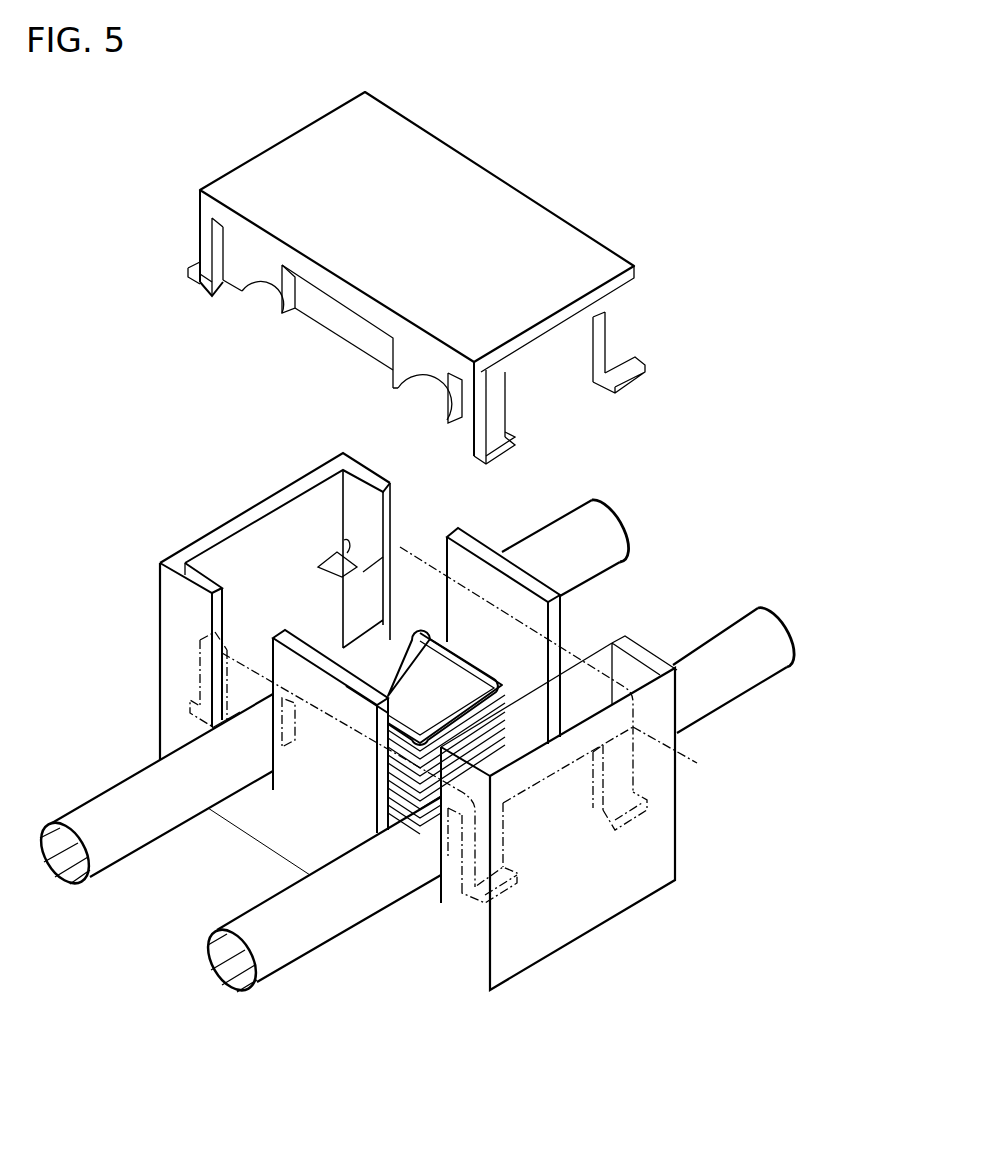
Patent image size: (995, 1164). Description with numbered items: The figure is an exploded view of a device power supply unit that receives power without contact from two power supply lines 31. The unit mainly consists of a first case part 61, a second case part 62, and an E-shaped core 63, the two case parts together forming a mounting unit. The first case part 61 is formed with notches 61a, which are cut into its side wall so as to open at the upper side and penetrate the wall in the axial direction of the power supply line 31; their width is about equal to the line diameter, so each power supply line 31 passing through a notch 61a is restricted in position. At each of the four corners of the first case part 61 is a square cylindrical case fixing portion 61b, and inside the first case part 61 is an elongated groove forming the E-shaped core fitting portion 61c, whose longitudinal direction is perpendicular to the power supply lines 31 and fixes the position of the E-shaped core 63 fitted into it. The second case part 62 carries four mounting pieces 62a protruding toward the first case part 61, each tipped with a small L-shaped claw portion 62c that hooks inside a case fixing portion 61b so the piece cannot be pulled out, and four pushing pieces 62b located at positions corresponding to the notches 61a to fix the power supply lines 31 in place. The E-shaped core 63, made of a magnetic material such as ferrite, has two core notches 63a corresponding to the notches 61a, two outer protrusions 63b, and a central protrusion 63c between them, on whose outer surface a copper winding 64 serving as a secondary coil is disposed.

The power supply line 31 is at (600, 512).
The first case part 61 is at (222, 498).
The notch 61a is at (212, 690).
The case fixing portion 61b is at (350, 558).
The E-shaped core fitting portion 61c is at (222, 680).
The second case part 62 is at (535, 148).
The mounting piece 62a is at (206, 238).
The pushing piece 62b is at (277, 293).
The claw portion 62c is at (190, 272).
The E-shaped core 63 is at (548, 667).
The core notch 63a is at (268, 693).
The outer protrusion 63b is at (273, 593).
The central protrusion 63c is at (492, 677).
The winding 64 is at (432, 690).